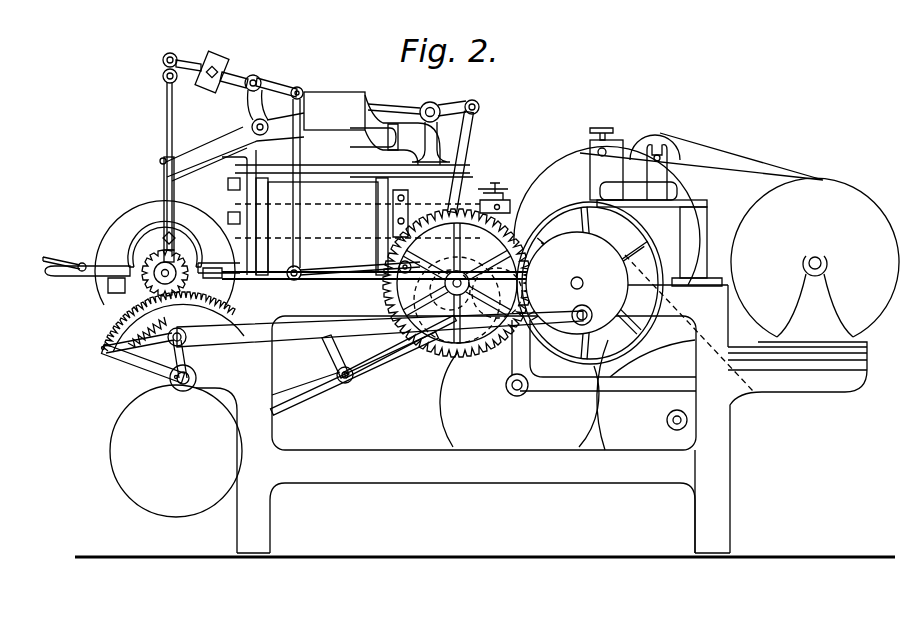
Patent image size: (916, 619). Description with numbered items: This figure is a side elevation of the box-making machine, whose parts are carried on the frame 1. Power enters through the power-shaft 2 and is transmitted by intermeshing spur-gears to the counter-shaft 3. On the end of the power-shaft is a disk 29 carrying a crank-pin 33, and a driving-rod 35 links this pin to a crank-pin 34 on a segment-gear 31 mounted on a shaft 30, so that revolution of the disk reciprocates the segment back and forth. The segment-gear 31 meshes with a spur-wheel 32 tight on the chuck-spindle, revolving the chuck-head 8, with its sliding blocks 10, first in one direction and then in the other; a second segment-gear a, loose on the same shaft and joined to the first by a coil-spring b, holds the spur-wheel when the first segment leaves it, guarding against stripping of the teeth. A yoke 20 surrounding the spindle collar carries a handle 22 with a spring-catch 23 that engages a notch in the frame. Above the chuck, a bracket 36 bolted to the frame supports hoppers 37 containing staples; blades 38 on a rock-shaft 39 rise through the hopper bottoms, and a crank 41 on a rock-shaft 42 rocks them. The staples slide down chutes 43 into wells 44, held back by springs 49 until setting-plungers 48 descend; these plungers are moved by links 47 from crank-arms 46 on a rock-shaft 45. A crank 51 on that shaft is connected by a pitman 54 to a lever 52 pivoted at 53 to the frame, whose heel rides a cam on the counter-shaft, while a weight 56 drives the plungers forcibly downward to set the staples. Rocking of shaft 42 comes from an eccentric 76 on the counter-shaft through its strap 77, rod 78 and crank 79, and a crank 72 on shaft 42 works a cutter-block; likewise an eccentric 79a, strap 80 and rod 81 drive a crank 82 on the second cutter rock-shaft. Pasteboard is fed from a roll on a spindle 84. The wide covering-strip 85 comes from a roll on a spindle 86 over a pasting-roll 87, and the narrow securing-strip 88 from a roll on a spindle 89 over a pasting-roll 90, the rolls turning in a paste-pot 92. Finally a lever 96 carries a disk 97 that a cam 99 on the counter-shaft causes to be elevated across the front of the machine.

The frame 1 is at (485, 361).
The power-shaft 2 is at (571, 283).
The counter-shaft 3 is at (457, 283).
The chuck-head 8 is at (140, 222).
The block 10 is at (178, 225).
The yoke 20 is at (140, 250).
The handle 22 is at (45, 273).
The spring-catch 23 is at (64, 257).
The disk 29 is at (577, 283).
The shaft 30 is at (172, 390).
The segment-gear 31 is at (108, 322).
The spur-wheel 32 is at (145, 280).
The crank-pin 33 is at (590, 310).
The crank-pin 34 is at (128, 357).
The driving-rod 35 is at (325, 343).
The bracket 36 is at (244, 168).
The hopper 37 is at (334, 111).
The blade 38 is at (380, 130).
The rock-shaft 39 is at (252, 124).
The crank 41 is at (396, 106).
The rock-shaft 42 is at (428, 102).
The chute 43 is at (203, 158).
The well 44 is at (163, 165).
The rock-shaft 45 is at (256, 78).
The crank-arm 46 is at (186, 58).
The link 47 is at (162, 62).
The setting-plunger 48 is at (166, 118).
The spring 49 is at (162, 159).
The crank 51 is at (297, 87).
The lever 52 is at (333, 270).
The pivot 53 is at (398, 262).
The pitman 54 is at (322, 226).
The weight 56 is at (220, 60).
The crank 72 is at (430, 182).
The eccentric 76 is at (414, 300).
The strap 77 is at (430, 290).
The rod 78 is at (472, 135).
The crank 79 is at (465, 103).
The eccentric 79a is at (502, 280).
The strap 80 is at (495, 280).
The rod 81 is at (388, 354).
The crank 82 is at (282, 392).
The spindle 84 is at (508, 391).
The covering-strip 85 is at (778, 176).
The spindle 86 is at (826, 260).
The pasting-roll 87 is at (670, 140).
The securing-strip 88 is at (648, 266).
The spindle 89 is at (667, 420).
The pasting-roll 90 is at (566, 198).
The paste-pot 92 is at (690, 180).
The lever 96 is at (305, 393).
The disk 97 is at (176, 451).
The cam 99 is at (478, 255).
The segment-gear a is at (176, 377).
The coil-spring b is at (103, 348).